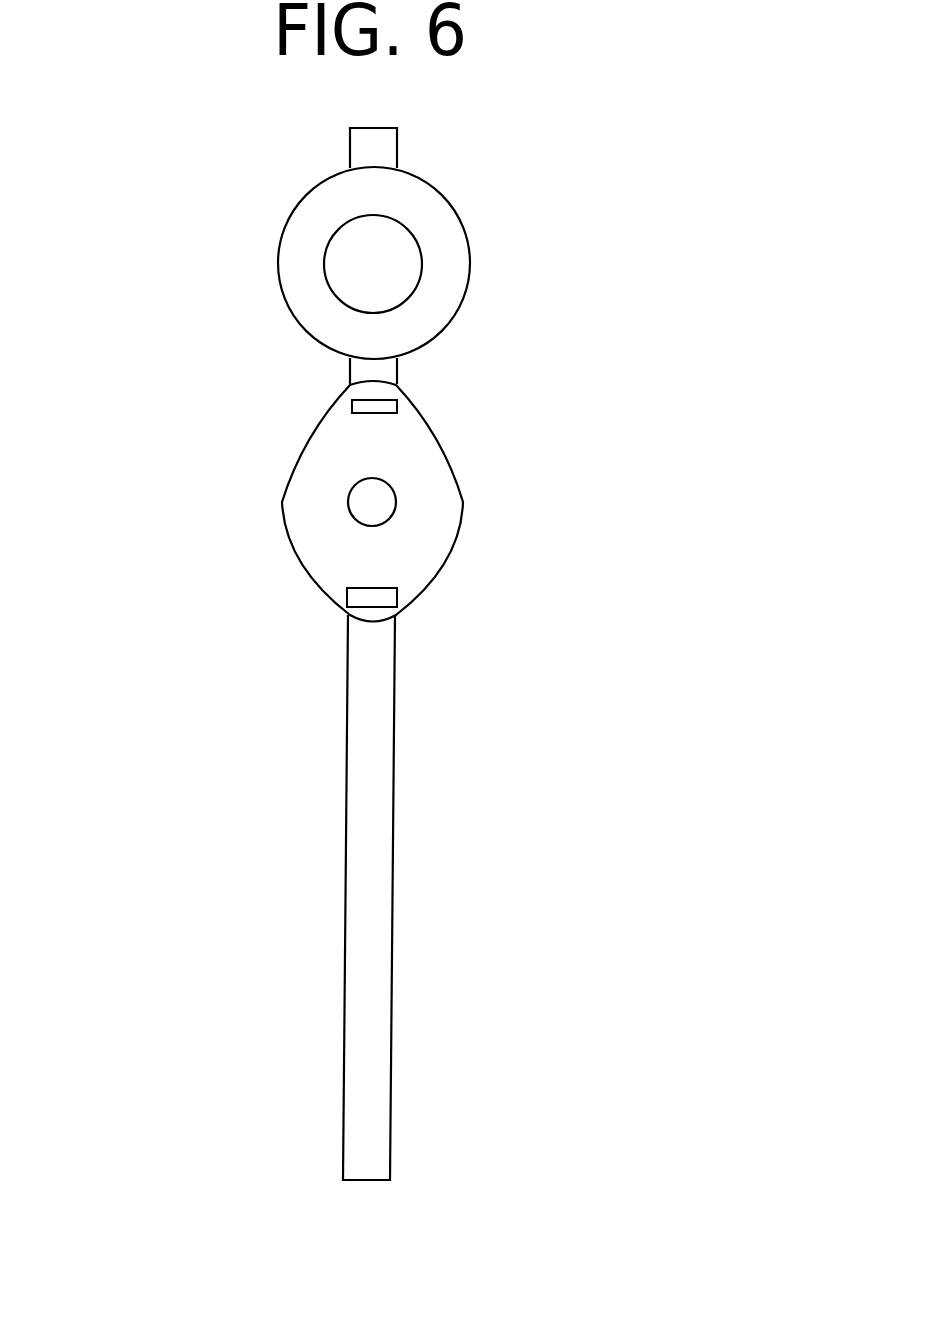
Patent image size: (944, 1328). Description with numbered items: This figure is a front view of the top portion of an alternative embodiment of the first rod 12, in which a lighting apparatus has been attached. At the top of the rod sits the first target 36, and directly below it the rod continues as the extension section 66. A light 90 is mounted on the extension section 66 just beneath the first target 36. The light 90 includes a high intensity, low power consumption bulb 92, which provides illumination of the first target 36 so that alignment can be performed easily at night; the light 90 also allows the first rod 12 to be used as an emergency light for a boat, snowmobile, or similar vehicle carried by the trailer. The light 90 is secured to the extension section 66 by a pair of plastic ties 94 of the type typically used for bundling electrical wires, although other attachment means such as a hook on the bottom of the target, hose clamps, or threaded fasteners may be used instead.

The first rod 12 is at (270, 782).
The first target 36 is at (471, 271).
The extension section 66 is at (358, 992).
The light 90 is at (410, 456).
The bulb 92 is at (375, 507).
The plastic ties 94 is at (367, 597).